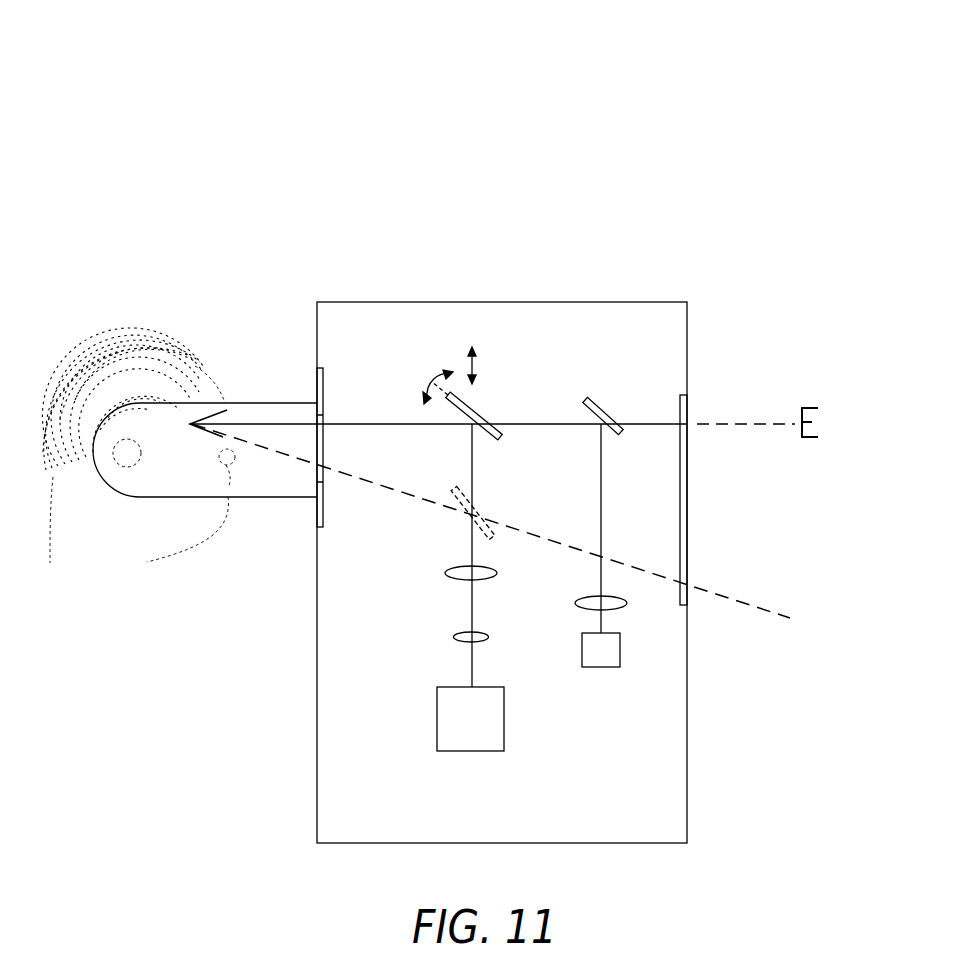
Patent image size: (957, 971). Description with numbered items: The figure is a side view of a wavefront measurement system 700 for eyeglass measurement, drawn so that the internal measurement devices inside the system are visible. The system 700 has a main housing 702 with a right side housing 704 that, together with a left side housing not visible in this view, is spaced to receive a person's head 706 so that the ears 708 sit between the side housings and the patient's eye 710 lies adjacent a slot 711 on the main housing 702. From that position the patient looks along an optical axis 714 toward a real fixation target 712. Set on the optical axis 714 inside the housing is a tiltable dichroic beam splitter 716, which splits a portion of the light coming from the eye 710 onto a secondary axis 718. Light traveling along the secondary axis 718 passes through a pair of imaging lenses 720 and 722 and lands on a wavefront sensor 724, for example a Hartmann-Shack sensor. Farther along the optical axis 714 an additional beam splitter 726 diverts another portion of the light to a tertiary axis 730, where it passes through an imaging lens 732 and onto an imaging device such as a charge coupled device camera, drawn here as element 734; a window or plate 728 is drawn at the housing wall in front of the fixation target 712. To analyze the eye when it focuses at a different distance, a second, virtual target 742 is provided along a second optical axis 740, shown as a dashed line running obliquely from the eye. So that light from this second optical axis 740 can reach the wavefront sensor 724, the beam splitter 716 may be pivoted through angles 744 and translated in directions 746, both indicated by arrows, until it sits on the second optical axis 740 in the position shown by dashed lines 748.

The eyeglass measurement system 700 is at (542, 428).
The main housing 702 is at (584, 302).
The right side housing 704 is at (272, 403).
The person's head 706 is at (95, 353).
The ears 708 is at (122, 460).
The patient's eye 710 is at (203, 420).
The slot 711 is at (316, 472).
The real fixation target 712 is at (812, 405).
The optical axis 714 is at (367, 423).
The tiltable dichroic beam splitter 716 is at (470, 404).
The secondary axis 718 is at (470, 530).
The imaging lens 720 is at (490, 578).
The imaging lens 722 is at (487, 640).
The wavefront sensor 724 is at (504, 720).
The additional beam splitter 726 is at (600, 408).
The window 728 is at (690, 405).
The tertiary axis 730 is at (603, 458).
The imaging lens 732 is at (618, 607).
The second detector 734 is at (620, 650).
The second optical axis 740 is at (365, 480).
The virtual target 742 is at (808, 637).
The angles 744 is at (437, 377).
The directions 746 is at (475, 363).
The dashed lines 748 is at (490, 540).